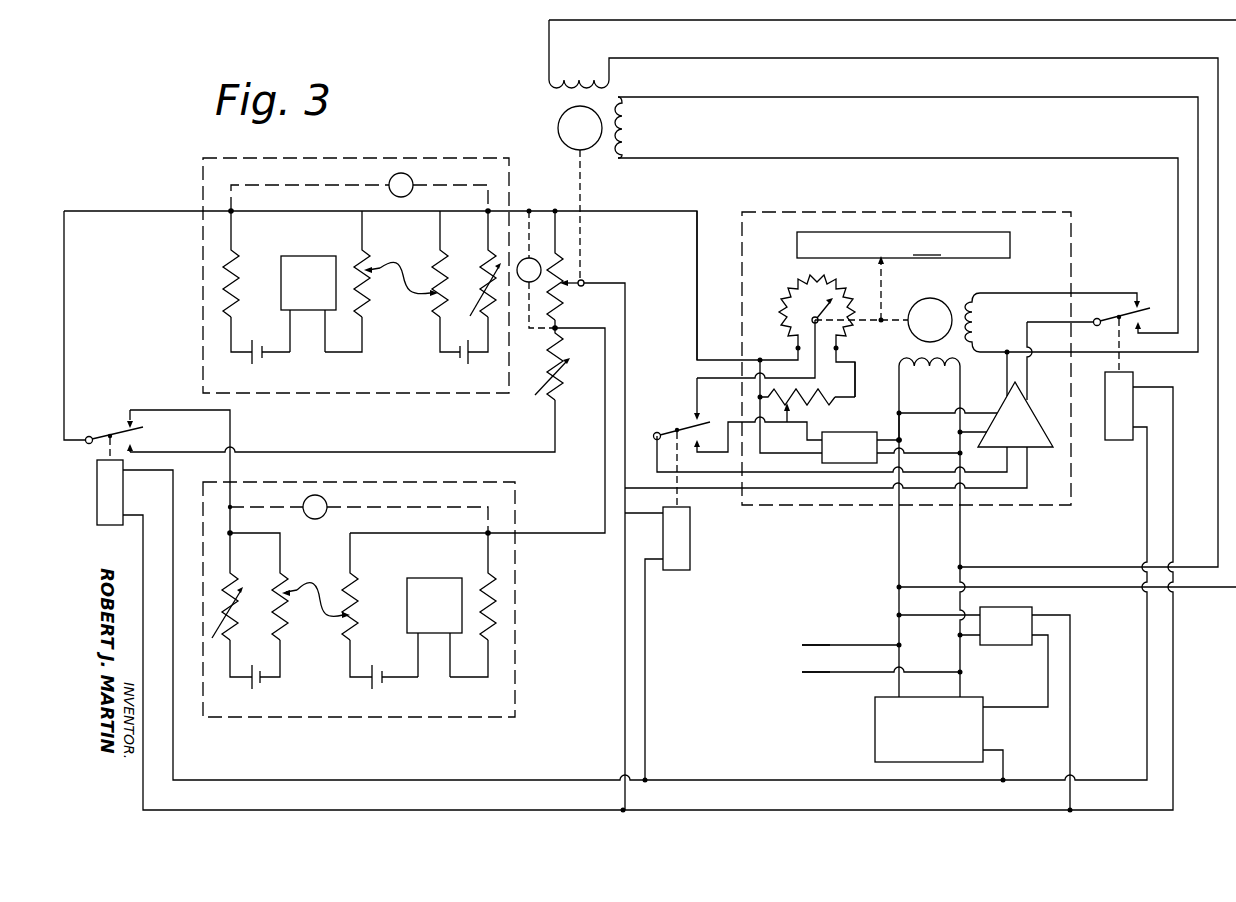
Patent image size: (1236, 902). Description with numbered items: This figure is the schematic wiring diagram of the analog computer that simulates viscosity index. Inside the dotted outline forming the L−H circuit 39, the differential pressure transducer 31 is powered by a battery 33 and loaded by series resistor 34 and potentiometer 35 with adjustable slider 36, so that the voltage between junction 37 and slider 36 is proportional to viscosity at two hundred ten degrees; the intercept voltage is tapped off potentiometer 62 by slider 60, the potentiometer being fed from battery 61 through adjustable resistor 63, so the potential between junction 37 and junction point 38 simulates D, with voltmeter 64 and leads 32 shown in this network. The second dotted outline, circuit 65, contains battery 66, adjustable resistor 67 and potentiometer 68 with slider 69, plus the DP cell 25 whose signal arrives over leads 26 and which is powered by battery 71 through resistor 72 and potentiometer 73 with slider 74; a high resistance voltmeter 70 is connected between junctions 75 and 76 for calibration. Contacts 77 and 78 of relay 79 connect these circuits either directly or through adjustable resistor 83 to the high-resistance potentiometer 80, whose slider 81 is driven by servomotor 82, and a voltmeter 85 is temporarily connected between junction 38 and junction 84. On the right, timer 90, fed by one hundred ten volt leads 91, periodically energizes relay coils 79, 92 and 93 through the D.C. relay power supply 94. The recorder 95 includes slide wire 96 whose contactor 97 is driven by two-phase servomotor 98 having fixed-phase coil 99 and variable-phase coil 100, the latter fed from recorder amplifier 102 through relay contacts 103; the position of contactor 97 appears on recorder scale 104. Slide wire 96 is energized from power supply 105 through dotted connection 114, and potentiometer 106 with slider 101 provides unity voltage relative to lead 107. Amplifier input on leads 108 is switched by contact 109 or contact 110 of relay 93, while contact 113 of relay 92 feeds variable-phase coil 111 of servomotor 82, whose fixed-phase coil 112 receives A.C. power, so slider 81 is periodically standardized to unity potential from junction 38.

The DP cell 25 is at (450, 578).
The leads 26 is at (433, 677).
The differential pressure transducer 31 is at (313, 256).
The cell leads 32 is at (310, 352).
The battery 33 is at (255, 364).
The series resistor 34 is at (236, 292).
The potentiometer 35 is at (368, 292).
The adjustable slider 36 is at (376, 266).
The junction 37 is at (233, 210).
The junction point 38 is at (487, 210).
The L−H circuit 39 is at (280, 393).
The slider 60 is at (420, 296).
The battery 61 is at (463, 364).
The potentiometer 62 is at (462, 266).
The adjustable resistor 63 is at (483, 312).
The voltmeter 64 is at (413, 181).
The circuit 65 is at (318, 717).
The battery 66 is at (255, 689).
The adjustable resistor 67 is at (238, 578).
The potentiometer 68 is at (275, 624).
The slider 69 is at (297, 590).
The high resistance voltmeter 70 is at (327, 503).
The battery 71 is at (370, 689).
The resistor 72 is at (486, 640).
The potentiometer 73 is at (360, 597).
The slider 74 is at (340, 618).
The junction 75 is at (232, 532).
The junction 76 is at (487, 532).
The relay contact 77 is at (126, 421).
The relay contact 78 is at (134, 449).
The relay 79 is at (97, 488).
The potentiometer 80 is at (566, 272).
The slider 81 is at (584, 288).
The servomotor 82 is at (558, 128).
The adjustable resistor 83 is at (563, 386).
The junction 84 is at (558, 327).
The high-resistance voltmeter 85 is at (518, 276).
The timer 90 is at (1000, 647).
The leads 91 is at (840, 648).
The relay coil 92 is at (1112, 440).
The relay coil 93 is at (690, 536).
The D.C. relay power supply 94 is at (875, 731).
The recorder 95 is at (863, 506).
The slide wire 96 is at (791, 288).
The contactor 97 is at (818, 306).
The servomotor 98 is at (932, 298).
The fixed-phase coil 99 is at (912, 373).
The variable-phase coil 100 is at (978, 313).
The slider 101 is at (791, 418).
The recorder amplifier 102 is at (1048, 394).
The relay contacts 103 is at (1152, 283).
The recorder scale 104 is at (903, 276).
The recorder working current power supply 105 is at (897, 435).
The potentiometer 106 is at (824, 403).
The lead 107 is at (696, 306).
The leads 108 is at (790, 474).
The contact 109 is at (691, 413).
The contact 110 is at (697, 450).
The variable-phase coil 111 is at (630, 129).
The fixed-phase coil 112 is at (598, 78).
The contact 113 is at (1140, 333).
The dotted connection 114 is at (857, 372).